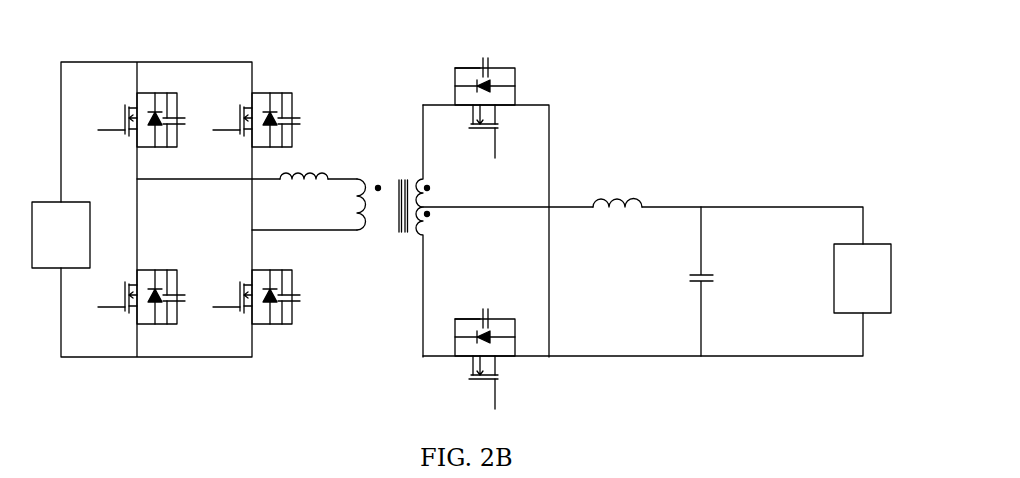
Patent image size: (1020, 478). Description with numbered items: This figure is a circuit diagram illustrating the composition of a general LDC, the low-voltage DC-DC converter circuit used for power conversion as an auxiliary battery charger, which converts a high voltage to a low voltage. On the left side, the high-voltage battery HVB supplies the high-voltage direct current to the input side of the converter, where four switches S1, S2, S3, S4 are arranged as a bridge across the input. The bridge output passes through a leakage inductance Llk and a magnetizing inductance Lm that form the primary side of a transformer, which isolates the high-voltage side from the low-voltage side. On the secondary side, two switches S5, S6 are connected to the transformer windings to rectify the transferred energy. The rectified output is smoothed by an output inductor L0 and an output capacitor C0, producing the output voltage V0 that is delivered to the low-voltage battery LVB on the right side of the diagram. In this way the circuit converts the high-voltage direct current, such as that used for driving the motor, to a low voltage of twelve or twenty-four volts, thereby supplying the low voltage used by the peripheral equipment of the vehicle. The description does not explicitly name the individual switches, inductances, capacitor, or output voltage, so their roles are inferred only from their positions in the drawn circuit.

The primary switch S1 is at (139, 116).
The primary switch S2 is at (139, 295).
The primary switch S3 is at (254, 116).
The primary switch S4 is at (254, 295).
The secondary switch S5 is at (481, 108).
The secondary switch S6 is at (480, 359).
The leakage inductance Llk is at (304, 164).
The magnetizing inductance Lm is at (353, 204).
The output inductor L0 is at (617, 191).
The output capacitor C0 is at (686, 281).
The output voltage V0 is at (805, 278).
The high-voltage battery HVB is at (61, 235).
The low-voltage battery LVB is at (862, 278).